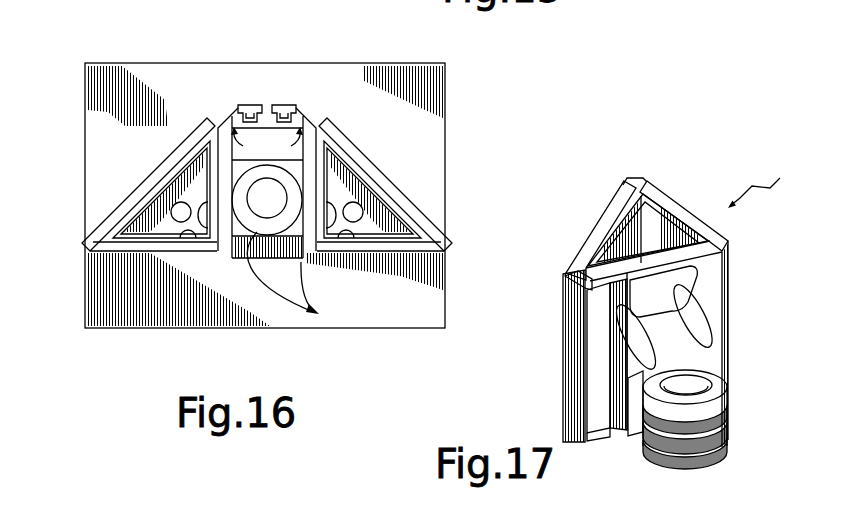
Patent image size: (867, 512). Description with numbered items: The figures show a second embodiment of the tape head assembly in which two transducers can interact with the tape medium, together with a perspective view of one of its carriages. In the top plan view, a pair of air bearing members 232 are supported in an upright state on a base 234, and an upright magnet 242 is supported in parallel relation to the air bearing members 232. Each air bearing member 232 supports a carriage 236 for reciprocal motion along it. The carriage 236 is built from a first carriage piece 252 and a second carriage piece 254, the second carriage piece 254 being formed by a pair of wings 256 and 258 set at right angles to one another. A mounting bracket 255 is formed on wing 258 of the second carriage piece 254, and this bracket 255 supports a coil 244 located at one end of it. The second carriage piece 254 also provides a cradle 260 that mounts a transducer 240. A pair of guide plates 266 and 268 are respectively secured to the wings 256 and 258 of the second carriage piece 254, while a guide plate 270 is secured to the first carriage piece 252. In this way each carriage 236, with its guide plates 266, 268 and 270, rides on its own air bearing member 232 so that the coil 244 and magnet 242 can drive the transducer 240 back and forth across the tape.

In FIG. 16, the air bearing member 232 is at (172, 173).
In FIG. 16, the base 234 is at (382, 66).
In FIG. 16, the carriage 236 is at (132, 256).
In FIG. 17, the carriage 236 is at (719, 187).
In FIG. 16, the transducer 240 is at (287, 105).
In FIG. 17, the transducer 240 is at (576, 389).
In FIG. 16, the magnet 242 is at (253, 209).
In FIG. 16, the coil 244 is at (254, 238).
In FIG. 17, the coil 244 is at (729, 422).
In FIG. 17, the first carriage piece 252 is at (600, 227).
In FIG. 17, the second carriage piece 254 is at (730, 293).
In FIG. 17, the mounting bracket 255 is at (690, 364).
In FIG. 17, the wing 256 is at (676, 200).
In FIG. 17, the wing 258 is at (731, 247).
In FIG. 16, the cradle 260 is at (267, 143).
In FIG. 17, the cradle 260 is at (600, 417).
In FIG. 16, the guide plate 266 is at (302, 277).
In FIG. 17, the guide plate 266 is at (646, 192).
In FIG. 16, the guide plate 268 is at (188, 240).
In FIG. 17, the guide plate 268 is at (614, 262).
In FIG. 16, the guide plate 270 is at (142, 205).
In FIG. 17, the guide plate 270 is at (627, 184).